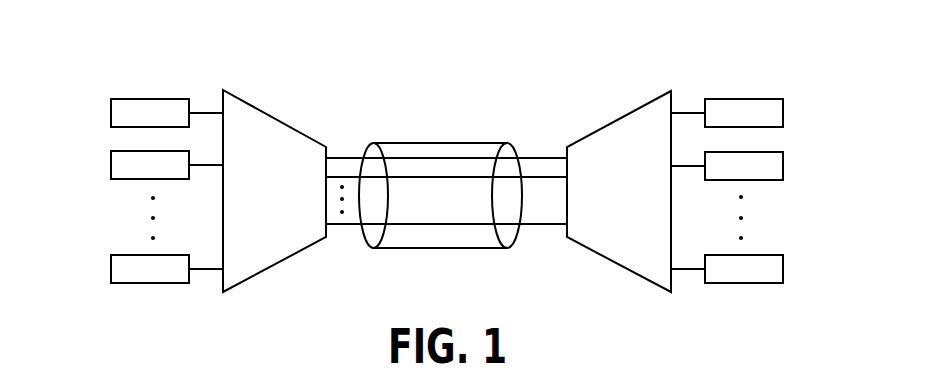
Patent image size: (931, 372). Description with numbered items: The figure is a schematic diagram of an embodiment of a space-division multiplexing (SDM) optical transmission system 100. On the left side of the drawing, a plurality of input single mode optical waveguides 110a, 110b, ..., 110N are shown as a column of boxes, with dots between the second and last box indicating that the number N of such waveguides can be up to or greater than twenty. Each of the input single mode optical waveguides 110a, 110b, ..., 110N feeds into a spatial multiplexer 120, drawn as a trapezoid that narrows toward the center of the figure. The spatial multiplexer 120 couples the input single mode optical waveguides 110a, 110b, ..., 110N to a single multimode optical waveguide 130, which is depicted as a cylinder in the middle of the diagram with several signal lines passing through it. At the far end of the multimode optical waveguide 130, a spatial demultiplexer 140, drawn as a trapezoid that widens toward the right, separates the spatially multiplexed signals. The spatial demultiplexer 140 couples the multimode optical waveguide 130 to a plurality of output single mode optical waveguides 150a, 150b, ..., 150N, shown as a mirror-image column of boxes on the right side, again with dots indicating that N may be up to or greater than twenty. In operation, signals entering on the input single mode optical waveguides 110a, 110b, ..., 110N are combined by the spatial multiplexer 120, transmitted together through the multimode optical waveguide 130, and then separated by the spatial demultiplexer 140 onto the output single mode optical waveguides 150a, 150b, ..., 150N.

The space-division multiplexing optical transmission system 100 is at (556, 46).
The input single mode optical waveguide 110a is at (111, 110).
The input single mode optical waveguide 110b is at (111, 166).
The input single mode optical waveguide 110N is at (111, 267).
The spatial multiplexer 120 is at (267, 112).
The multimode optical waveguide 130 is at (405, 143).
The spatial demultiplexer 140 is at (615, 120).
The output single mode optical waveguide 150a is at (783, 108).
The output single mode optical waveguide 150b is at (783, 167).
The output single mode optical waveguide 150N is at (783, 267).